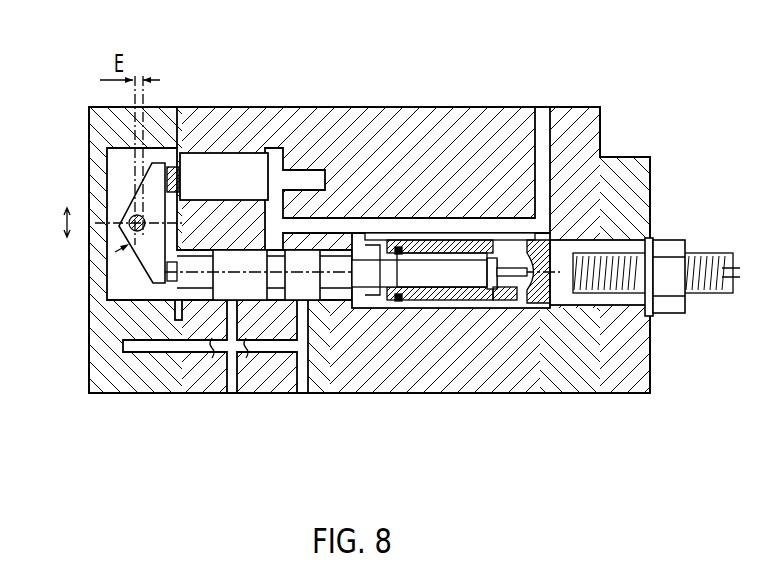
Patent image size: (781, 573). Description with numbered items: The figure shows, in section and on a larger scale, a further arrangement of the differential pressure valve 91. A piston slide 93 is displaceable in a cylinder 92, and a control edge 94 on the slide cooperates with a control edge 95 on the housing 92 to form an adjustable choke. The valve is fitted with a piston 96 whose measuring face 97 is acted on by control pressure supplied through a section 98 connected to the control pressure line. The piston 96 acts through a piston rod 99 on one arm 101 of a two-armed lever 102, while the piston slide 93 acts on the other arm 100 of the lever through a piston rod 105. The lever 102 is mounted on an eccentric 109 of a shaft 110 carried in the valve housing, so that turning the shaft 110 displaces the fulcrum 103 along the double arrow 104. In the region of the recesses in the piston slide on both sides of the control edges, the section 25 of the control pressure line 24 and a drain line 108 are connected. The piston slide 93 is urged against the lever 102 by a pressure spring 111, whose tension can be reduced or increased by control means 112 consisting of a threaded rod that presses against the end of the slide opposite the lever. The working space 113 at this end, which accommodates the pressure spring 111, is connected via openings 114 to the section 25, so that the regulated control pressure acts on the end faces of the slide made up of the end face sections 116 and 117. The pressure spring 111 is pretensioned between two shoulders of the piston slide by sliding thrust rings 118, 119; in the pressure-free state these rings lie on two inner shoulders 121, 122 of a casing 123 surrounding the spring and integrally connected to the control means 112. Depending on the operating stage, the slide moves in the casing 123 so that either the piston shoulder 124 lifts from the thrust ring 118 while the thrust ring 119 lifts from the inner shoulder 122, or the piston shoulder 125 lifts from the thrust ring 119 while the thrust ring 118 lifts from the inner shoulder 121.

The control pressure line 24 is at (229, 393).
The section of the control pressure line 25 is at (545, 106).
The differential pressure valve 91 is at (402, 98).
The cylinder 92 is at (455, 115).
The piston slide 93 is at (263, 305).
The control edge 94 is at (232, 250).
The control edge 95 is at (302, 275).
The piston 96 is at (204, 152).
The measuring face 97 is at (288, 175).
The section 98 is at (318, 225).
The piston rod 99 is at (167, 166).
The arm 100 is at (150, 280).
The arm 101 is at (157, 190).
The two-armed lever 102 is at (115, 252).
The fulcrum 103 is at (110, 212).
The double arrow 104 is at (92, 224).
The piston rod 105 is at (155, 300).
The drain line 108 is at (305, 393).
The eccentric 109 is at (120, 249).
The shaft 110 is at (136, 223).
The pressure spring 111 is at (452, 300).
The control means 112 is at (701, 252).
The working space 113 is at (380, 300).
The openings 114 is at (368, 244).
The end face section 116 is at (368, 300).
The end face section 117 is at (520, 285).
The sliding thrust ring 118 is at (428, 305).
The sliding thrust ring 119 is at (470, 302).
The inner shoulder 121 is at (418, 240).
The inner shoulder 122 is at (495, 233).
The casing 123 is at (456, 205).
The piston shoulder 124 is at (410, 302).
The piston shoulder 125 is at (493, 302).